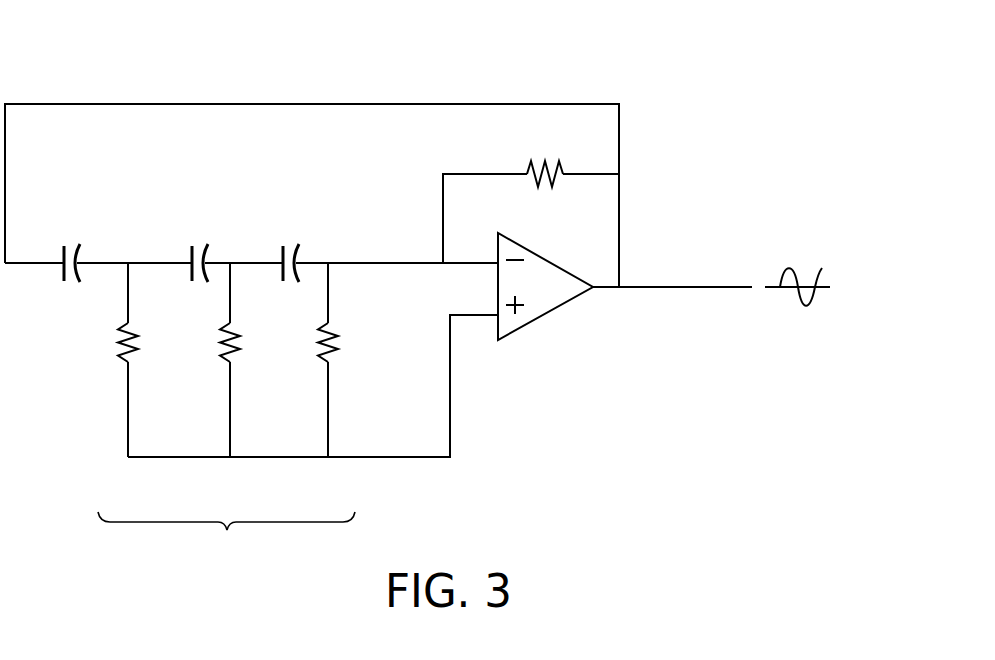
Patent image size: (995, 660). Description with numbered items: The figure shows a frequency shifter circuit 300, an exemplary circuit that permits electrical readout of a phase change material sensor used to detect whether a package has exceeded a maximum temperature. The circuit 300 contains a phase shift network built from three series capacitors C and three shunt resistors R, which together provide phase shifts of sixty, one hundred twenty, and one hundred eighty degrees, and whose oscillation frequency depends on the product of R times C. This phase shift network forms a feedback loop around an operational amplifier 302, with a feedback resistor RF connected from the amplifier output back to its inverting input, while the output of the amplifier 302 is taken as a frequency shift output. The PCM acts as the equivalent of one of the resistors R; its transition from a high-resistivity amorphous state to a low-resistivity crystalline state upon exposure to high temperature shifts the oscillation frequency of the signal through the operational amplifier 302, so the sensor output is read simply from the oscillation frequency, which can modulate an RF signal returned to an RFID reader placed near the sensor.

The frequency shifter circuit 300 is at (450, 285).
The operational amplifier 302 is at (565, 297).
The capacitor C is at (181, 244).
The resistor R is at (269, 365).
The feedback resistor RF is at (545, 158).
The phase change material PCM is at (368, 360).